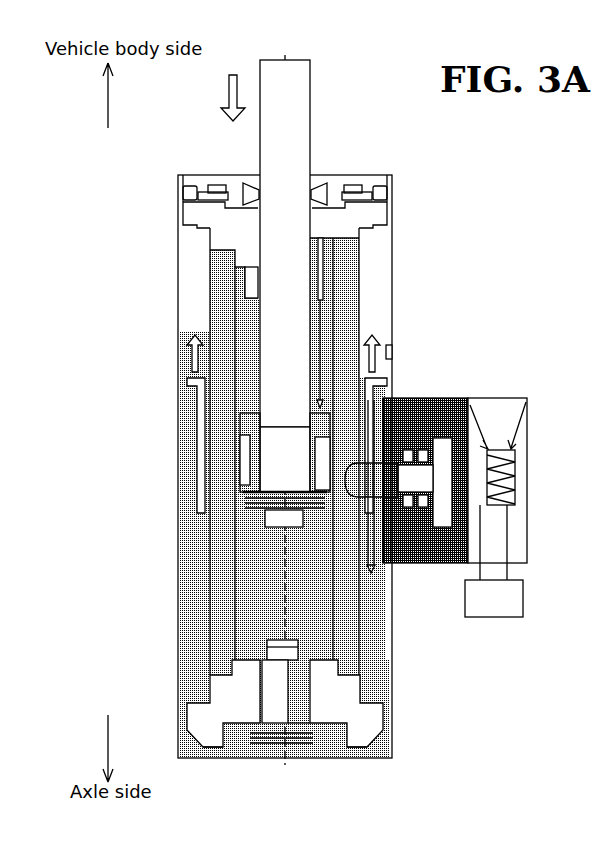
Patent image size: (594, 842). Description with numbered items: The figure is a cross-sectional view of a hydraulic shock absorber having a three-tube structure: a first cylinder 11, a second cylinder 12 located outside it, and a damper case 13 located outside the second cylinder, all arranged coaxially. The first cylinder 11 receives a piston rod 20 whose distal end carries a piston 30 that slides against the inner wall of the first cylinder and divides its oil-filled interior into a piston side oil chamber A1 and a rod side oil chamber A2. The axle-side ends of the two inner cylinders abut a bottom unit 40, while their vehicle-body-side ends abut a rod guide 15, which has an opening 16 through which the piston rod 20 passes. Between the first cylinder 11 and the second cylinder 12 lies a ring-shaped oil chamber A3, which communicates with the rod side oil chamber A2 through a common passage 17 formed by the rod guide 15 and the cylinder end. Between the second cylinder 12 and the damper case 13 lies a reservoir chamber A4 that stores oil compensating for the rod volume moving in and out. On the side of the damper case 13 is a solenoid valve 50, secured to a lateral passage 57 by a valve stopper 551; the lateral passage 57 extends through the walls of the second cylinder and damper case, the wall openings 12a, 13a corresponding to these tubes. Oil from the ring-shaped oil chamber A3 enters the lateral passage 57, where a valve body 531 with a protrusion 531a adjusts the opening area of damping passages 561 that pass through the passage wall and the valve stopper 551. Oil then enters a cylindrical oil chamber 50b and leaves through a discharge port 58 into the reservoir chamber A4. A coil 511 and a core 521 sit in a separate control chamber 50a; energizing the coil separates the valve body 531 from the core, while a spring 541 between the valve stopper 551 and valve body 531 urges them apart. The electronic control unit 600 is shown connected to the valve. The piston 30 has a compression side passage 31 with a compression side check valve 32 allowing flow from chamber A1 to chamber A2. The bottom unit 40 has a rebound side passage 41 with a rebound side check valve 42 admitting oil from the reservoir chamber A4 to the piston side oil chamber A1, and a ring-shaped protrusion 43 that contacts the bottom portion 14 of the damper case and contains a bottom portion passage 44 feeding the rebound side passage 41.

The piston rod 20 is at (311, 165).
The rod guide 15 is at (183, 213).
The damper case 13 is at (392, 240).
The opening 16 is at (215, 263).
The second cylinder 12 is at (362, 265).
The common passage 17 is at (330, 287).
The first cylinder 11 is at (338, 308).
The rod side oil chamber A2 is at (215, 306).
The ring-shaped oil chamber A3 is at (218, 332).
The discharge port 58 is at (390, 355).
The valve stopper 551 is at (392, 398).
The damping passages 561 is at (402, 440).
The spring 541 is at (437, 402).
The cylindrical oil chamber 50b is at (467, 408).
The control chamber 50a is at (522, 415).
The solenoid valve 50 is at (527, 442).
The coil 511 is at (500, 456).
The valve body 531 is at (427, 478).
The core 521 is at (515, 496).
The protrusion 531a is at (500, 502).
The compression side check valve 32 is at (250, 425).
The compression side passage 31 is at (242, 453).
The piston 30 is at (268, 477).
The piston side oil chamber A1 is at (250, 580).
The reservoir chamber A4 is at (190, 612).
The rebound side check valve 42 is at (265, 650).
The lateral passage 57 is at (400, 560).
The outer shell opening 13a is at (393, 577).
The outer tube opening 12a is at (388, 590).
The rebound side passage 41 is at (320, 691).
The bottom unit 40 is at (355, 721).
The bottom portion 14 is at (240, 758).
The bottom portion passage 44 is at (335, 758).
The ring-shaped protrusion 43 is at (352, 757).
The electronic control unit (ECU) 600 is at (523, 600).